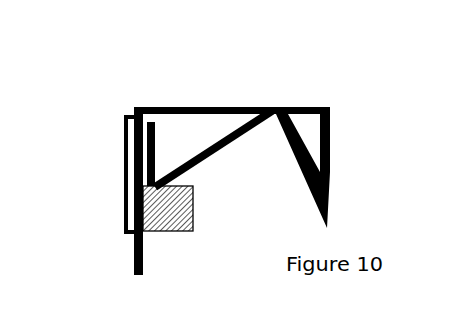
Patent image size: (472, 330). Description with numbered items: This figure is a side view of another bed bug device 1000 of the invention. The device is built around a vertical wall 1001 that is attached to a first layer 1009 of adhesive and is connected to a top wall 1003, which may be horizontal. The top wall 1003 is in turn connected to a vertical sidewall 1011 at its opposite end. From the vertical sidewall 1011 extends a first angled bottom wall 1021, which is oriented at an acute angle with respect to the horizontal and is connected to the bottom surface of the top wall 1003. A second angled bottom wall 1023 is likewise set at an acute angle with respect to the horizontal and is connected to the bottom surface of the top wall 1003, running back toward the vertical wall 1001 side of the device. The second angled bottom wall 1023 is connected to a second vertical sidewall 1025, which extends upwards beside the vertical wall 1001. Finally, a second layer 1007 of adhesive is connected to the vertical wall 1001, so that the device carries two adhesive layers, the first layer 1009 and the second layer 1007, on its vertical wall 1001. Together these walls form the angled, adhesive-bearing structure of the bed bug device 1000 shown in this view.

The bed bug device 1000 is at (223, 167).
The vertical wall 1001 is at (133, 250).
The top wall 1003 is at (262, 108).
The second layer of adhesive 1007 is at (168, 232).
The first layer of adhesive 1009 is at (115, 172).
The vertical sidewall 1011 is at (330, 166).
The first angled bottom wall 1021 is at (292, 146).
The second angled bottom wall 1023 is at (206, 158).
The second vertical sidewall 1025 is at (143, 142).